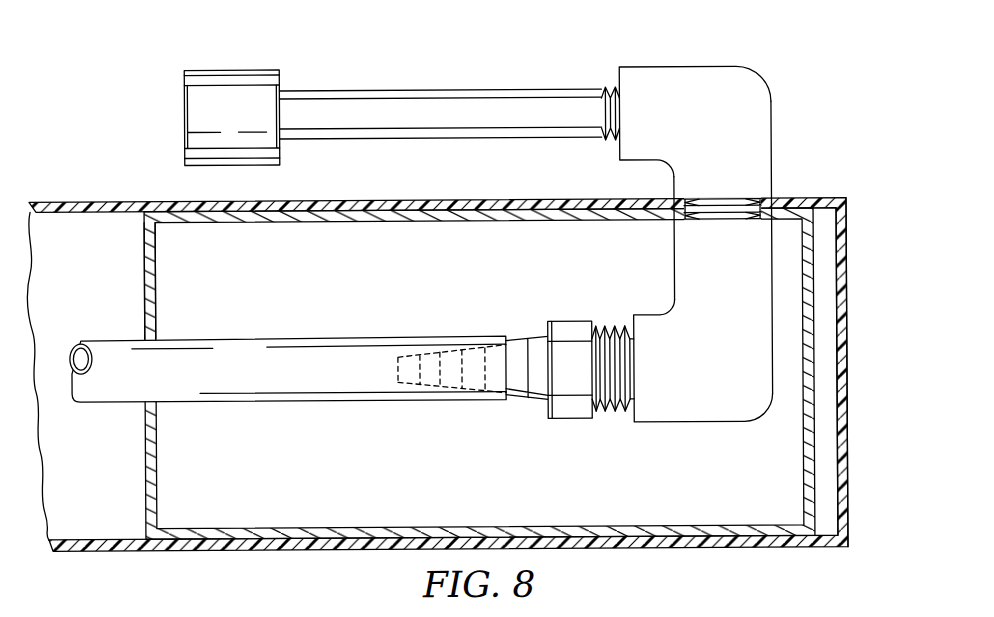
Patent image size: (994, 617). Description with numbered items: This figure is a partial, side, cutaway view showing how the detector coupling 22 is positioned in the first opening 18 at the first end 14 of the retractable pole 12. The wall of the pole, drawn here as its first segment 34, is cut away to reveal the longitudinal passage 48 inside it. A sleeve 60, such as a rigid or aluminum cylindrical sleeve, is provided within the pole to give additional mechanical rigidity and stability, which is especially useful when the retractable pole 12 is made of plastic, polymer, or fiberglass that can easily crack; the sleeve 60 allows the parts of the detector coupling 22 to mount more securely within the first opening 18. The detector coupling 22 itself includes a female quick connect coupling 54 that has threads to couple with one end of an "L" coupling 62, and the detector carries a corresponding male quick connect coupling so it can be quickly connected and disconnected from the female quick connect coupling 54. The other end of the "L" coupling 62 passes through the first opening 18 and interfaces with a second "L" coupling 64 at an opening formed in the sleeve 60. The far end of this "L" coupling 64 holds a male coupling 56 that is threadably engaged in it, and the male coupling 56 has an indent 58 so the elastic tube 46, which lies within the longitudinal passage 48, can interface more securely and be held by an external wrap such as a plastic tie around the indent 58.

The retractable pole 12 is at (138, 190).
The first end 14 is at (848, 372).
The first opening 18 is at (688, 222).
The detector coupling 22 is at (696, 197).
The first segment 34 is at (382, 199).
The elastic tube 46 is at (367, 336).
The longitudinal passage 48 is at (78, 481).
The female quick connect coupling 54 is at (219, 118).
The male coupling 56 is at (517, 342).
The indent 58 is at (611, 327).
The sleeve 60 is at (145, 262).
The "L" coupling 62 is at (675, 126).
The "L" coupling 64 is at (680, 380).